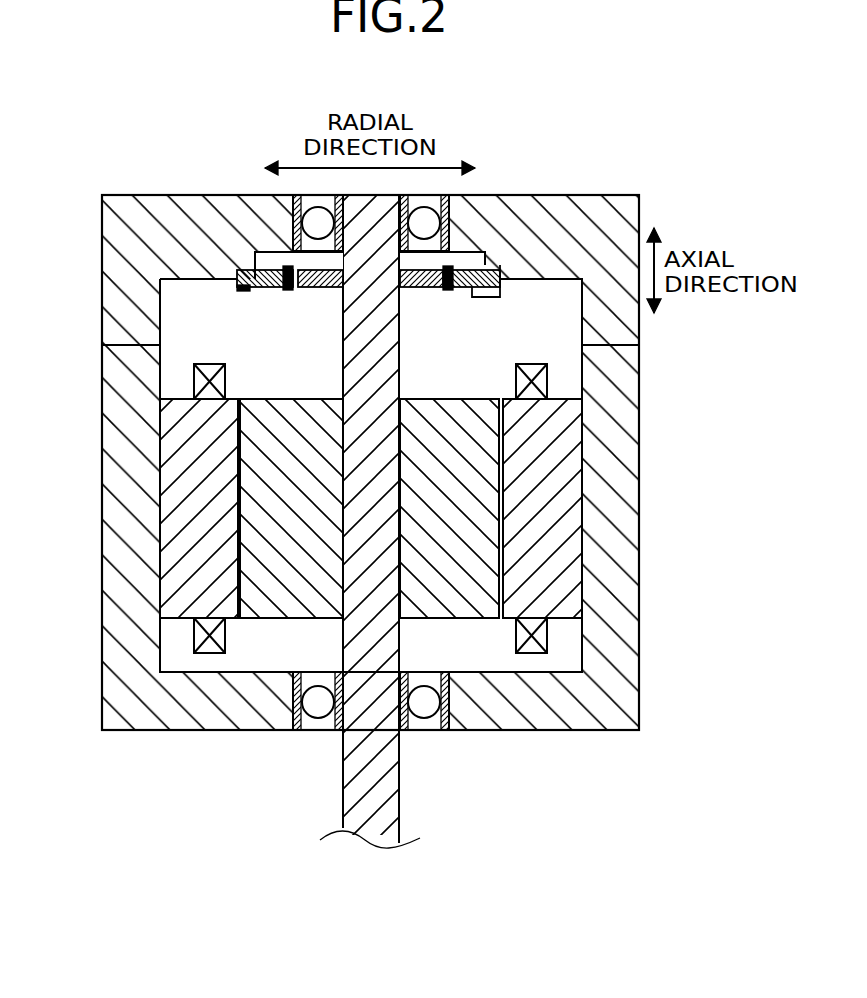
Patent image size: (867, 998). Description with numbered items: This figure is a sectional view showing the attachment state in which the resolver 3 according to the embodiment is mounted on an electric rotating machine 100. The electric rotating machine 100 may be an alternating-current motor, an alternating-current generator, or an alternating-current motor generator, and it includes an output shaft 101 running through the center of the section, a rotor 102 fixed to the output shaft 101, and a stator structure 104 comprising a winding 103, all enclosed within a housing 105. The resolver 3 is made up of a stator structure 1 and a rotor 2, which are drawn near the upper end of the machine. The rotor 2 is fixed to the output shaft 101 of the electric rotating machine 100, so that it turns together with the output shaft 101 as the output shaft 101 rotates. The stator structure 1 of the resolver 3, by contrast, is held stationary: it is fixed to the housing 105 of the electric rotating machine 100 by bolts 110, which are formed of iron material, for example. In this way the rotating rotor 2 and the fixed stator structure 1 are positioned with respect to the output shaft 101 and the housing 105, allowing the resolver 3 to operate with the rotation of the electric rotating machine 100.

The stator structure 1 is at (267, 291).
The rotor 2 is at (370, 309).
The resolver 3 is at (368, 328).
The electric rotating machine 100 is at (424, 521).
The output shaft 101 is at (383, 797).
The rotor 102 is at (478, 513).
The winding 103 is at (537, 386).
The stator structure 104 is at (555, 445).
The housing 105 is at (621, 592).
The bolts 110 is at (245, 291).